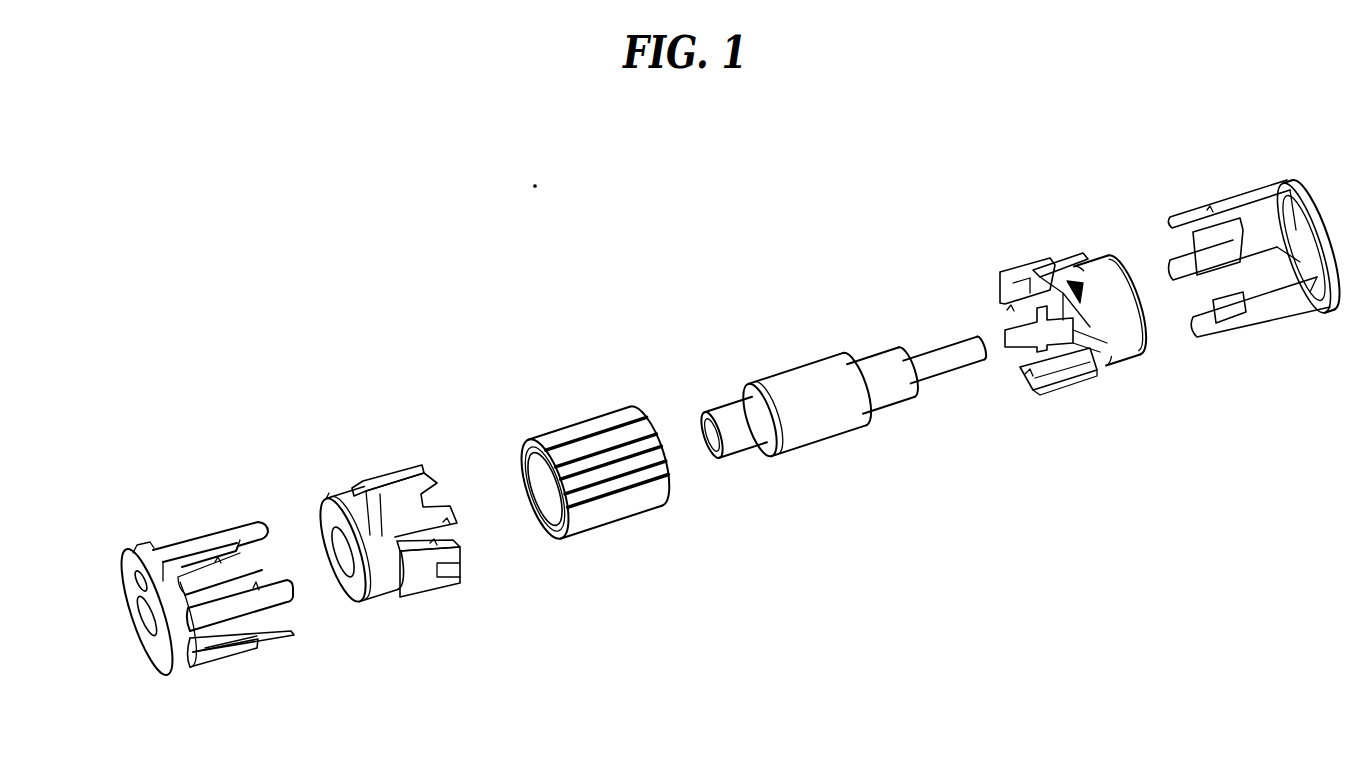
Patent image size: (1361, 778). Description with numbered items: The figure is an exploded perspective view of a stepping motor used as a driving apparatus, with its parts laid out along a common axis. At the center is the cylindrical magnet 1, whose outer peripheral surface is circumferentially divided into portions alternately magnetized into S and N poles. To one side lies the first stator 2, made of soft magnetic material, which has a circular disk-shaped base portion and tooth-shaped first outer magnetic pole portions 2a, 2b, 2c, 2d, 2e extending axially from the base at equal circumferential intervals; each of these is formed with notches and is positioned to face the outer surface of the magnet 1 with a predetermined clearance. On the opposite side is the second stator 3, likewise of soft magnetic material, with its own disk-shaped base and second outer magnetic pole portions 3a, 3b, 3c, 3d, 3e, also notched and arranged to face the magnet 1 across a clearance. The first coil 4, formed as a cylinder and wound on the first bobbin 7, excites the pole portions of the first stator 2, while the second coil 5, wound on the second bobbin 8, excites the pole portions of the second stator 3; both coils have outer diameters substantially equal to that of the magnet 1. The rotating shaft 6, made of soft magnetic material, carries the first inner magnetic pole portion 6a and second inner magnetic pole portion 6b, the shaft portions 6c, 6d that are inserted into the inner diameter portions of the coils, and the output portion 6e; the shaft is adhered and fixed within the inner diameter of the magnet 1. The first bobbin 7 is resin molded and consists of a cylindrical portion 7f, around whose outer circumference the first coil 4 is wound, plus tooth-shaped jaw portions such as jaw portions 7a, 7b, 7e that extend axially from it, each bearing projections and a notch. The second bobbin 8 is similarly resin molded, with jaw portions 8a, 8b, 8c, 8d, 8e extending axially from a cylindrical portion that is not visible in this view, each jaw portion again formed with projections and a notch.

The magnet 1 is at (600, 490).
The first stator 2 is at (164, 519).
The first outer magnetic pole portion 2a is at (280, 598).
The first outer magnetic pole portion 2b is at (248, 530).
The first outer magnetic pole portion 2c is at (270, 538).
The first outer magnetic pole portion 2d is at (233, 627).
The first outer magnetic pole portion 2e is at (258, 648).
The second stator 3 is at (1258, 158).
The second outer magnetic pole portion 3a is at (1220, 247).
The second outer magnetic pole portion 3b is at (1192, 215).
The second outer magnetic pole portion 3c is at (1177, 272).
The second outer magnetic pole portion 3d is at (1207, 330).
The second outer magnetic pole portion 3e is at (1240, 320).
The first coil 4 is at (377, 578).
The second coil 5 is at (1100, 263).
The rotating shaft 6 is at (784, 339).
The first inner magnetic pole portion 6a is at (783, 433).
The second inner magnetic pole portion 6b is at (863, 407).
The shaft portion 6c is at (733, 410).
The shaft portion 6d is at (885, 367).
The output portion 6e is at (947, 357).
The first bobbin 7 is at (420, 434).
The jaw portion 7a is at (388, 500).
The jaw portion 7b is at (412, 470).
The jaw portion 7e is at (413, 578).
The cylindrical portion 7f is at (322, 548).
The second bobbin 8 is at (1025, 244).
The jaw portion 8a is at (1088, 333).
The jaw portion 8b is at (1063, 263).
The jaw portion 8c is at (1000, 303).
The jaw portion 8d is at (1020, 370).
The jaw portion 8e is at (1085, 383).